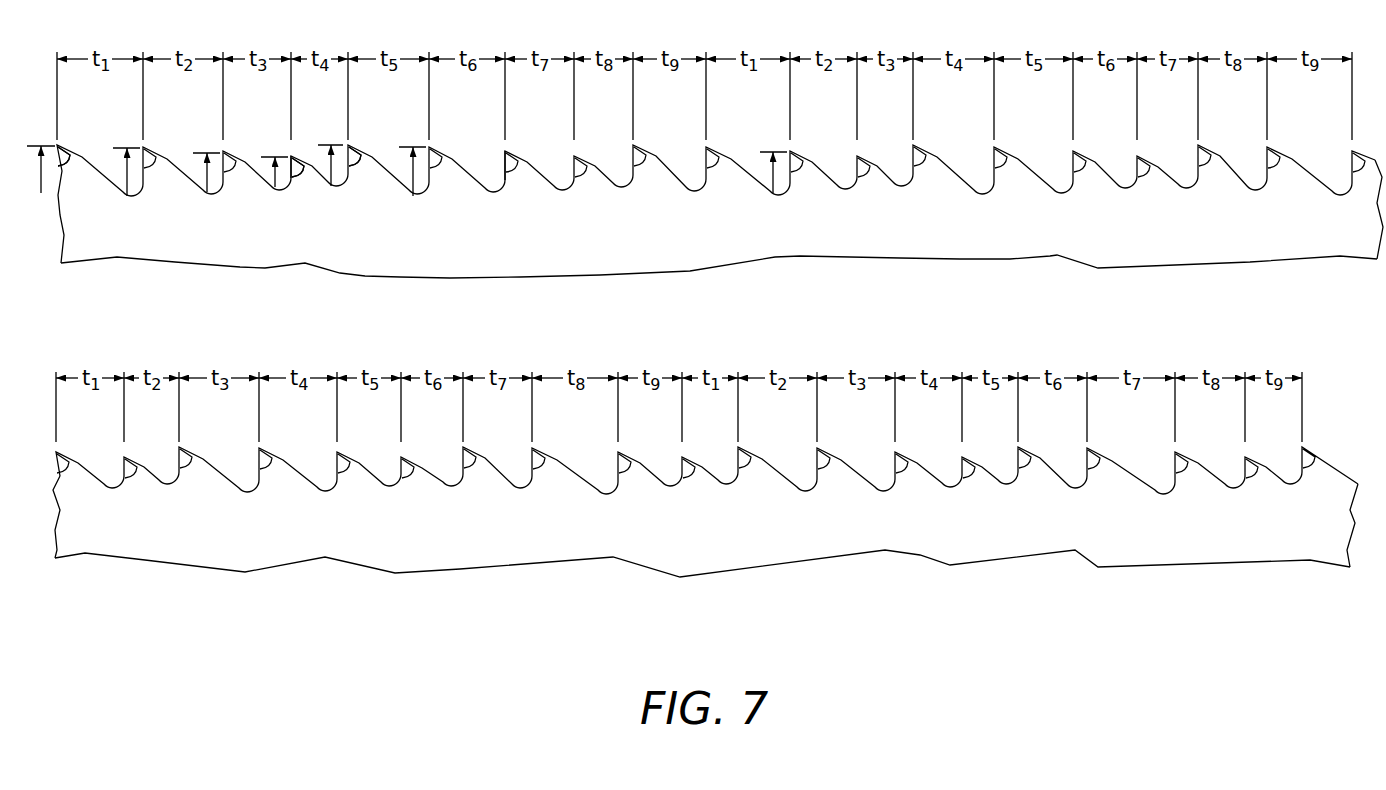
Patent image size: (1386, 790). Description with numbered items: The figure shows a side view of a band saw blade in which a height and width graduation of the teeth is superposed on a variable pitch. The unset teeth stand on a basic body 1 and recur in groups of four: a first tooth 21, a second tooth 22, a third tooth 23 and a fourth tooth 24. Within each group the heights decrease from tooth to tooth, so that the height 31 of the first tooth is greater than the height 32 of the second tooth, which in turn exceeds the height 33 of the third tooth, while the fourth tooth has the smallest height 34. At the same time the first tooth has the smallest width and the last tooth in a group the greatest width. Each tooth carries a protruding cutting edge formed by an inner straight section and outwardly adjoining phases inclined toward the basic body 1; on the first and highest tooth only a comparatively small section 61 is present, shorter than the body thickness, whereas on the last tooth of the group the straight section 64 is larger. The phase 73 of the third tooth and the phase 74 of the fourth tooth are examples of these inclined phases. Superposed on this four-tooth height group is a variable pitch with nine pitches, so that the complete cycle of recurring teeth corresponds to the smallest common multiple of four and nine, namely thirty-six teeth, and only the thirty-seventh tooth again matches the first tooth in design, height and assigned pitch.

The basic body 1 is at (398, 250).
The first tooth 21 is at (1320, 588).
The second tooth 22 is at (1105, 588).
The third tooth 23 is at (1193, 588).
The fourth tooth 24 is at (1263, 588).
The height of first tooth 31 is at (331, 255).
The height of second tooth 32 is at (413, 268).
The height of third tooth 33 is at (773, 250).
The height of fourth tooth 34 is at (275, 258).
The section of first tooth 61 is at (348, 145).
The section of fourth tooth 64 is at (292, 156).
The phase of third tooth 73 is at (503, 158).
The phase of fourth tooth 74 is at (287, 157).